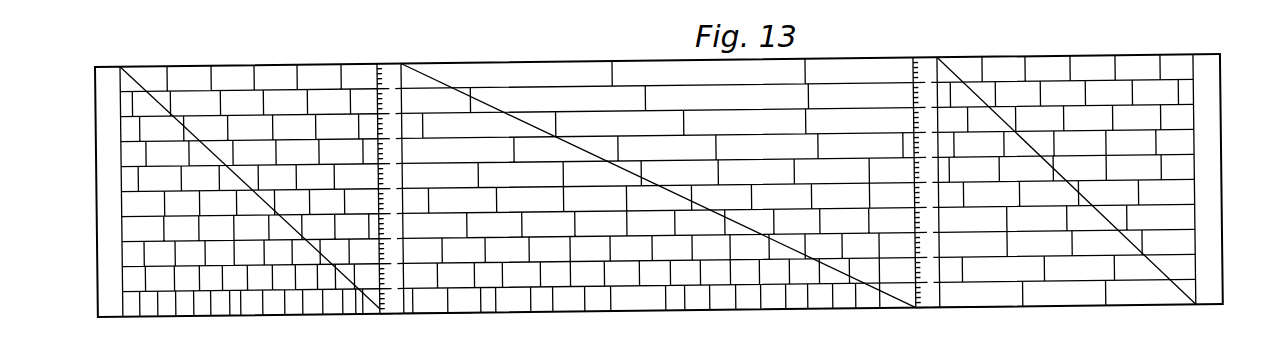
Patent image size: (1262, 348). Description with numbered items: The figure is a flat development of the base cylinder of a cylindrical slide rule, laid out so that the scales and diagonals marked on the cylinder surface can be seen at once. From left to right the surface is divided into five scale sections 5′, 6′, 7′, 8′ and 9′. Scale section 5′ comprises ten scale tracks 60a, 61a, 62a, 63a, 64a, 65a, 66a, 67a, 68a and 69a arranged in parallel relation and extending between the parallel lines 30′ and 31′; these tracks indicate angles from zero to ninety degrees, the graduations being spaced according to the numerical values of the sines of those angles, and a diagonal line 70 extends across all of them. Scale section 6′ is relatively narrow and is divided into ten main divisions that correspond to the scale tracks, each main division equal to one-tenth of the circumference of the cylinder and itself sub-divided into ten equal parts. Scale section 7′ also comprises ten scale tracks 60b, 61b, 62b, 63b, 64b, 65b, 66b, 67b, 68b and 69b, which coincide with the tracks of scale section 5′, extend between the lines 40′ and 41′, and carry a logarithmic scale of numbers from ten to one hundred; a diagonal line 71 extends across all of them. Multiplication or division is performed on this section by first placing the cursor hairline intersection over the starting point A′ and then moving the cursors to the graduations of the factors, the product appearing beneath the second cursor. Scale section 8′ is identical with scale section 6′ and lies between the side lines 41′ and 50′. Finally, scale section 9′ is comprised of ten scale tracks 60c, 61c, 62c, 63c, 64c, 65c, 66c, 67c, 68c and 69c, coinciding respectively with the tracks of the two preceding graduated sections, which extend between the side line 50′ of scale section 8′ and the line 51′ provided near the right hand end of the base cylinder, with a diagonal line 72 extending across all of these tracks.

The scale section 5′ is at (247, 60).
The scale section 6′ is at (397, 41).
The scale section 7′ is at (612, 45).
The scale section 8′ is at (934, 62).
The scale section 9′ is at (1101, 57).
The starting point A′ is at (401, 67).
The line 30′ is at (138, 88).
The line 31′ is at (377, 80).
The line 40′ is at (401, 318).
The line 41′ is at (909, 84).
The side line 50′ is at (939, 316).
The line 51′ is at (1190, 88).
The diagonal line 70 is at (146, 97).
The diagonal line 71 is at (438, 84).
The diagonal line 72 is at (952, 78).
The scale track 60a is at (128, 80).
The scale track 61a is at (128, 105).
The scale track 62a is at (128, 130).
The scale track 63a is at (128, 155).
The scale track 64a is at (128, 180).
The scale track 65a is at (128, 205).
The scale track 66a is at (128, 230).
The scale track 67a is at (128, 255).
The scale track 68a is at (128, 280).
The scale track 69a is at (128, 305).
The scale track 60b is at (456, 80).
The scale track 61b is at (517, 103).
The scale track 62b is at (572, 126).
The scale track 63b is at (632, 149).
The scale track 64b is at (752, 175).
The scale track 65b is at (673, 207).
The scale track 66b is at (598, 233).
The scale track 67b is at (553, 260).
The scale track 68b is at (488, 281).
The scale track 69b is at (438, 304).
The scale track 60c is at (1187, 87).
The scale track 61c is at (1187, 112).
The scale track 62c is at (1187, 137).
The scale track 63c is at (1187, 162).
The scale track 64c is at (1187, 187).
The scale track 65c is at (1187, 212).
The scale track 66c is at (1187, 237).
The scale track 67c is at (1187, 262).
The scale track 68c is at (1187, 287).
The scale track 69c is at (1187, 312).